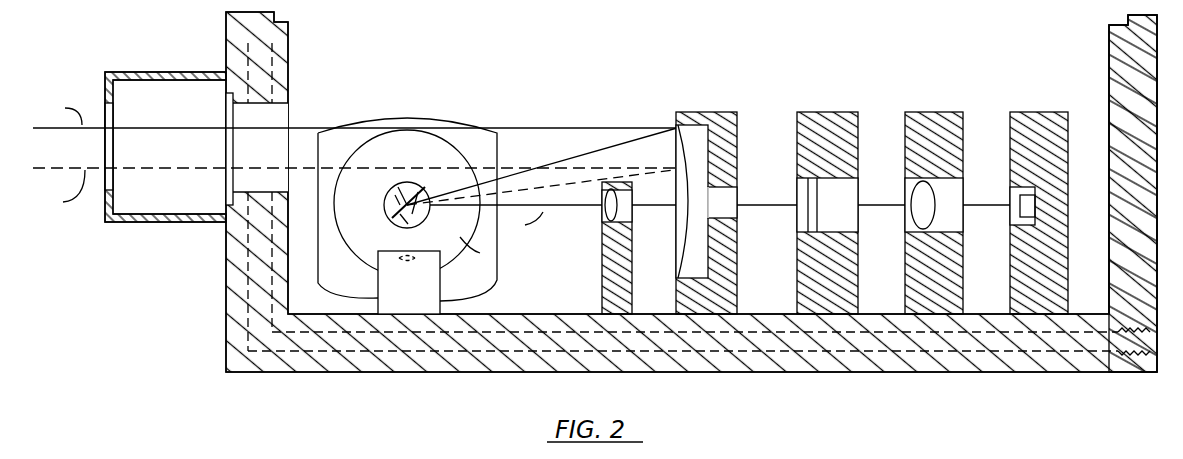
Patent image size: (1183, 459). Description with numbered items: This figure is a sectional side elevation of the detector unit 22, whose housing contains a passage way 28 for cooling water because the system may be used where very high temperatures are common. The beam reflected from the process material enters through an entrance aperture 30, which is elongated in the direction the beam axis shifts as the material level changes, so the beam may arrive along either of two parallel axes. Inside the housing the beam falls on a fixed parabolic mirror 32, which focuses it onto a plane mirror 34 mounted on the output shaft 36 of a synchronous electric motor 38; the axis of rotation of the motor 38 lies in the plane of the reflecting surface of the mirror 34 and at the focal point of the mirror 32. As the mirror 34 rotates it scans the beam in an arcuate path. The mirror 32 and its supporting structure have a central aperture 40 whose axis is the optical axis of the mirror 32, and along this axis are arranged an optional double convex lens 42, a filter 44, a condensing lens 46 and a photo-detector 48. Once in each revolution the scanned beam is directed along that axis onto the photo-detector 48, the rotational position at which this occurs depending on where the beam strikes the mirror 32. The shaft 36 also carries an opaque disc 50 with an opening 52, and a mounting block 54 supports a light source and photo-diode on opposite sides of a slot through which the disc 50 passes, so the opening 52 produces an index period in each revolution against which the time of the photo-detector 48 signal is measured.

The detector unit 22 is at (212, 315).
The passage way for cooling water 28 is at (463, 352).
The entrance aperture 30 is at (219, 142).
The fixed parabolic mirror 32 is at (707, 160).
The plane mirror 34 is at (430, 205).
The output shaft 36 is at (384, 200).
The synchronous electric motor 38 is at (468, 135).
The central aperture 40 is at (723, 196).
The double convex lens 42 is at (597, 212).
The filter 44 is at (800, 217).
The condensing lens 46 is at (910, 198).
The photo-detector 48 is at (1020, 197).
The opaque disc 50 is at (460, 237).
The opening 52 is at (410, 265).
The mounting block 54 is at (425, 297).